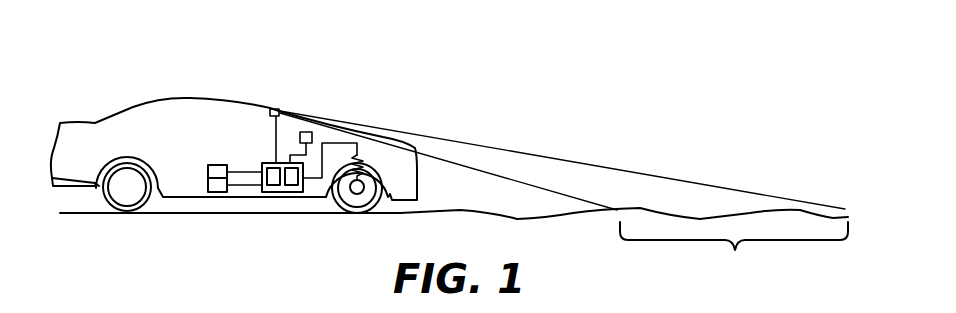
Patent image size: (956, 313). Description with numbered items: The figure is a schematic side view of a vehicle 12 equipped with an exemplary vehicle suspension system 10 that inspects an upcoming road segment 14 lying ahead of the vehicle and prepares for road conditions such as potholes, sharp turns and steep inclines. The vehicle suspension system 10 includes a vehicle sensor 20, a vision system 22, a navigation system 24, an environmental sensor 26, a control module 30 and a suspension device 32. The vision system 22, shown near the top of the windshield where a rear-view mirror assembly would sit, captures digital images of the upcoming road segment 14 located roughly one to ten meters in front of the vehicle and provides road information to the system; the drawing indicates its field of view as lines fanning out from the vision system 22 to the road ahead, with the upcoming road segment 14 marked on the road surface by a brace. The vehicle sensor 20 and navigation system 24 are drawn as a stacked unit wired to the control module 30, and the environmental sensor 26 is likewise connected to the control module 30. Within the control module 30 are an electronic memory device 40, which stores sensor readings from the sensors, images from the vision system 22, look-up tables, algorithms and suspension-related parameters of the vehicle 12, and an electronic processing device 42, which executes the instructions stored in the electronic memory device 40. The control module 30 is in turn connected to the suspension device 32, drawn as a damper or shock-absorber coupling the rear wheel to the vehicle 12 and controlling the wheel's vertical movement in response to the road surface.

The vehicle suspension system 10 is at (347, 79).
The vehicle 12 is at (133, 107).
The upcoming road segment 14 is at (734, 249).
The vehicle sensor 20 is at (220, 165).
The vision system 22 is at (276, 109).
The navigation system 24 is at (217, 193).
The environmental sensor 26 is at (307, 132).
The control module 30 is at (299, 193).
The suspension device 32 is at (358, 156).
The electronic memory device 40 is at (270, 193).
The electronic processing device 42 is at (292, 193).